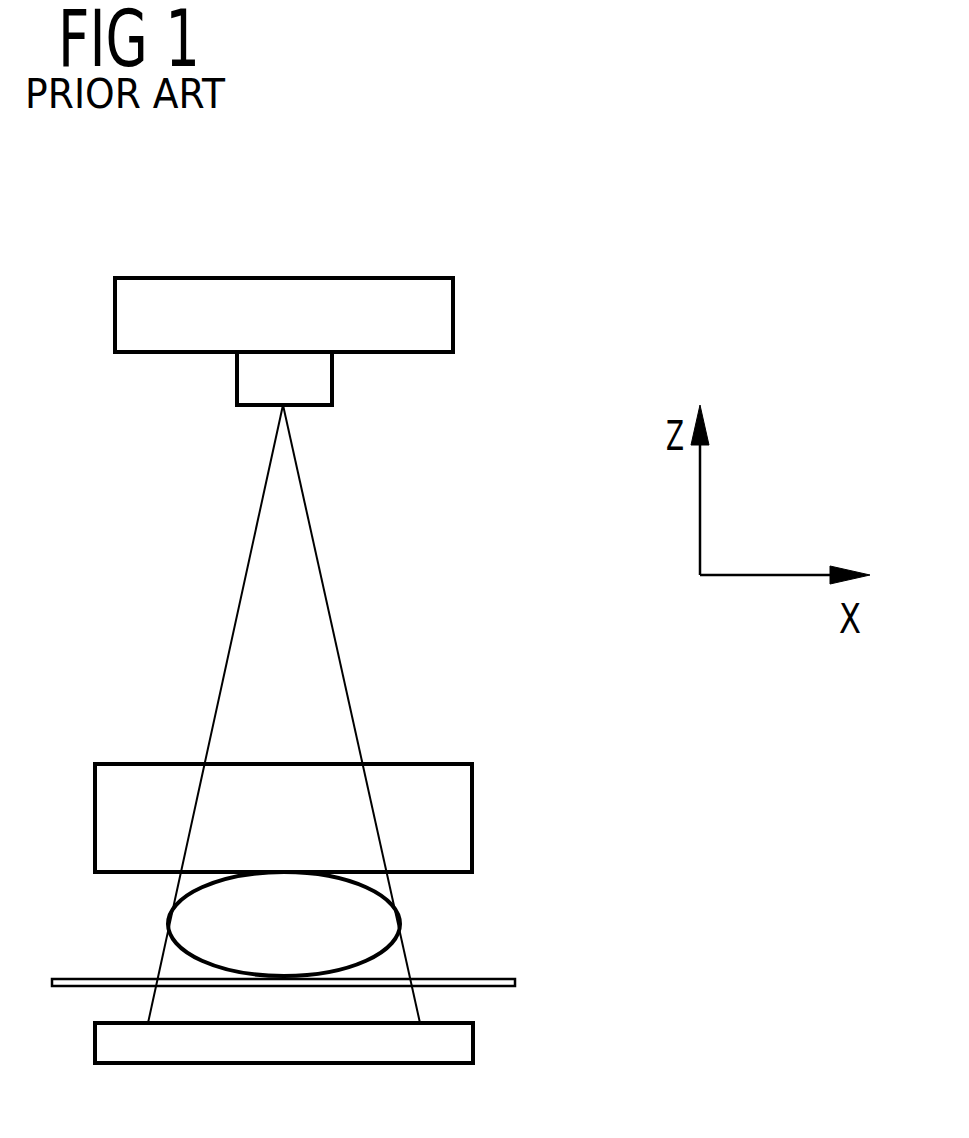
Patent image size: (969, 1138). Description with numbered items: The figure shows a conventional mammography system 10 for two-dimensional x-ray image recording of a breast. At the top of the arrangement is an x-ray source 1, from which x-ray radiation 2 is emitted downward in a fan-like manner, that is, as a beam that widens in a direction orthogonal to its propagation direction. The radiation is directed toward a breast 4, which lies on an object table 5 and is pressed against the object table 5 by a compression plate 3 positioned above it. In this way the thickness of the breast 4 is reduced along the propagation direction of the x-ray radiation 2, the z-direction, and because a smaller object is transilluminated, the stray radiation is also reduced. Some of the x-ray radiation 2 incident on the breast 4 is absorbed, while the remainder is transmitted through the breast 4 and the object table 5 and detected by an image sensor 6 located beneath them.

The x-ray source 1 is at (283, 278).
The x-ray radiation 2 is at (328, 602).
The compression plate 3 is at (472, 818).
The breast 4 is at (375, 925).
The object table 5 is at (515, 983).
The image sensor 6 is at (473, 1045).
The mammography system 10 is at (673, 220).